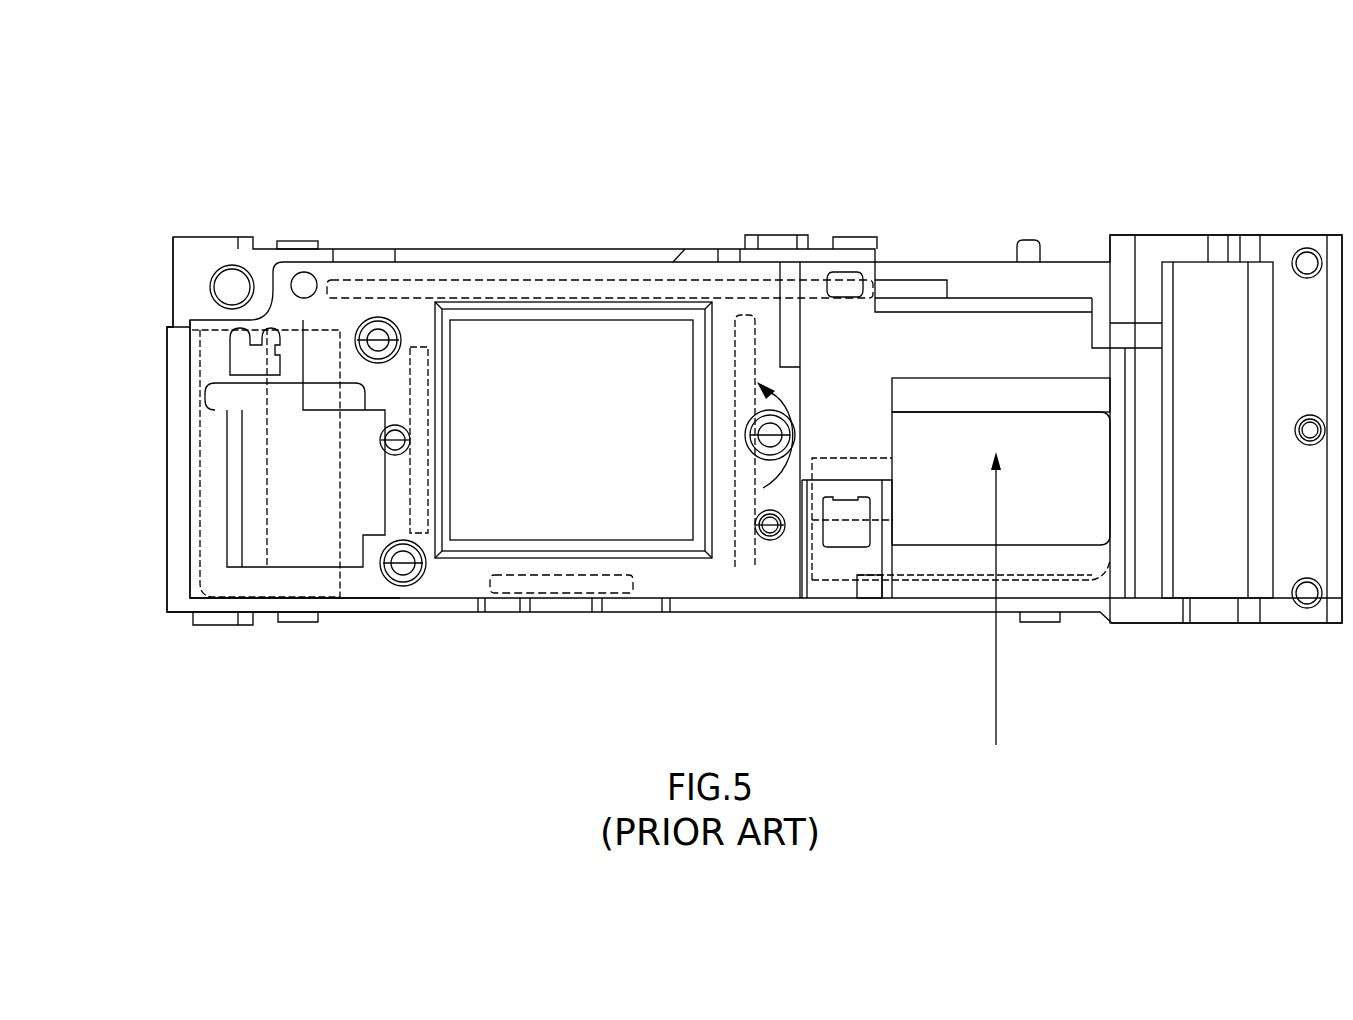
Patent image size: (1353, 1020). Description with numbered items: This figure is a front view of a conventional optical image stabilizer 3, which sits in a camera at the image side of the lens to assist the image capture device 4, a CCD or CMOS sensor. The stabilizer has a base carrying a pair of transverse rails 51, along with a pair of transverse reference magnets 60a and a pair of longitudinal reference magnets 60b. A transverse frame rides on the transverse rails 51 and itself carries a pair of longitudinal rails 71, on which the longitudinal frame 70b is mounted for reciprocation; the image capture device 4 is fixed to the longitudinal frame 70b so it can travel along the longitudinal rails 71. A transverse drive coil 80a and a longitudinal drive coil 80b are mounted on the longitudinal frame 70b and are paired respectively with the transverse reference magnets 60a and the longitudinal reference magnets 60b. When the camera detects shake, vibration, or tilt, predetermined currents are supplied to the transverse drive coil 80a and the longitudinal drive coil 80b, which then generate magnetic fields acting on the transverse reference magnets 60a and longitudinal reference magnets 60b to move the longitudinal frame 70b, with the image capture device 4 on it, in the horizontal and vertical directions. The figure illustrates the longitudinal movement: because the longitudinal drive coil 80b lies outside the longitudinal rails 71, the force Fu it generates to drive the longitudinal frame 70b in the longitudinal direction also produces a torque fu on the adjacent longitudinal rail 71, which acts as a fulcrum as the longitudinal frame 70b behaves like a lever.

The optical image stabilizer 3 is at (599, 125).
The image capture device 4 is at (656, 508).
The transverse rails 51 is at (527, 280).
The transverse reference magnets 60a is at (170, 602).
The longitudinal reference magnets 60b is at (1067, 582).
The longitudinal frame 70b is at (715, 600).
The longitudinal rails 71 is at (403, 575).
The transverse drive coil 80a is at (200, 525).
The longitudinal drive coil 80b is at (937, 513).
The torque fu is at (793, 435).
The force Fu is at (993, 616).